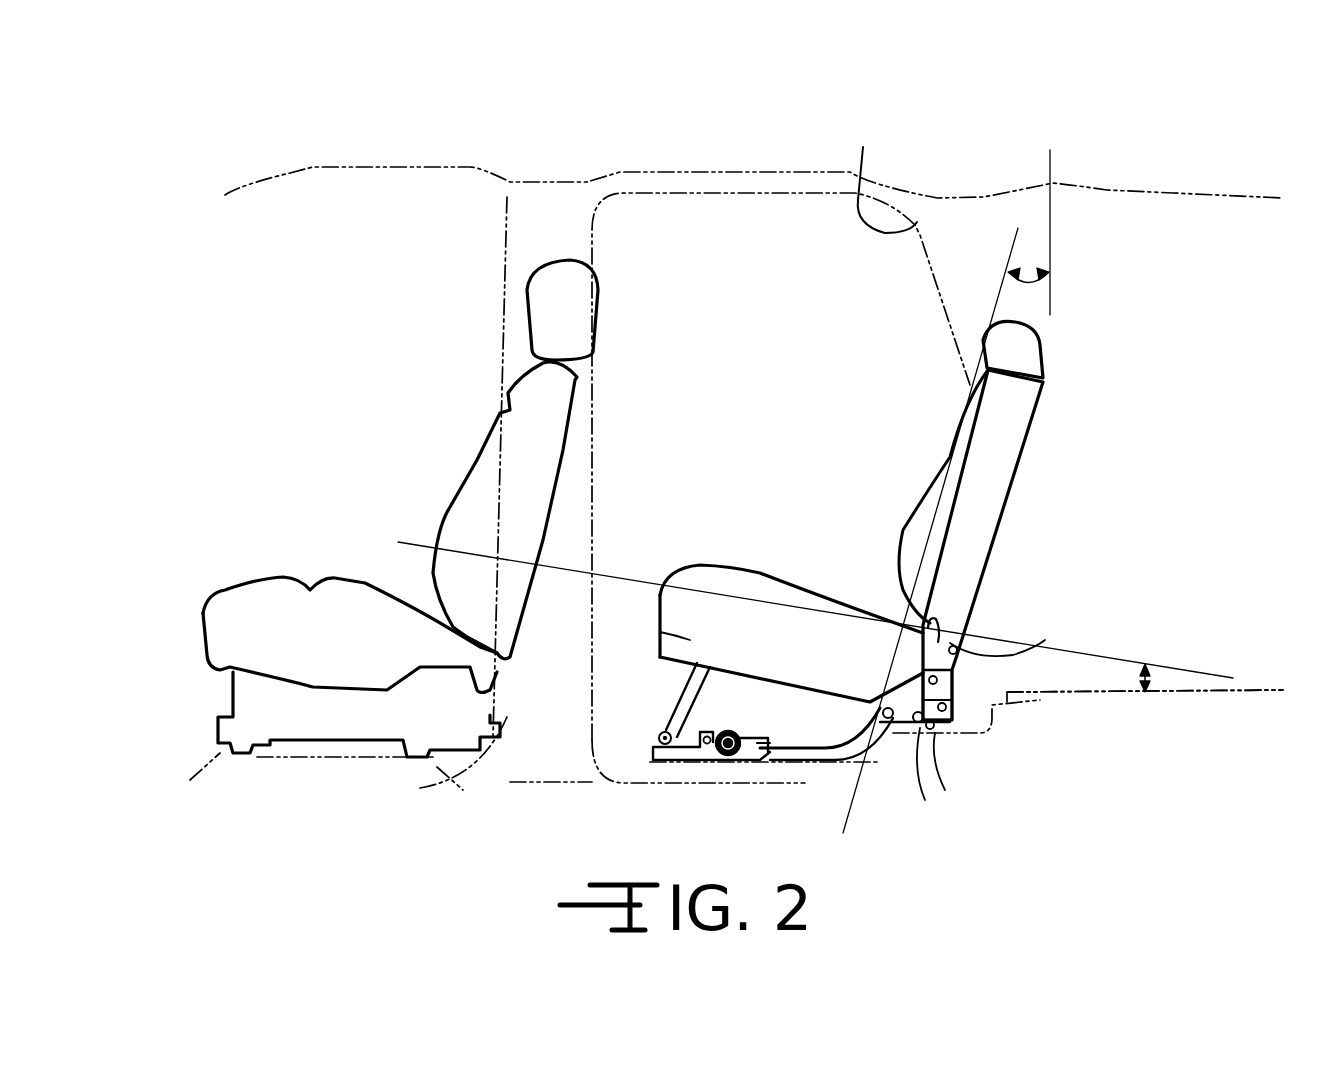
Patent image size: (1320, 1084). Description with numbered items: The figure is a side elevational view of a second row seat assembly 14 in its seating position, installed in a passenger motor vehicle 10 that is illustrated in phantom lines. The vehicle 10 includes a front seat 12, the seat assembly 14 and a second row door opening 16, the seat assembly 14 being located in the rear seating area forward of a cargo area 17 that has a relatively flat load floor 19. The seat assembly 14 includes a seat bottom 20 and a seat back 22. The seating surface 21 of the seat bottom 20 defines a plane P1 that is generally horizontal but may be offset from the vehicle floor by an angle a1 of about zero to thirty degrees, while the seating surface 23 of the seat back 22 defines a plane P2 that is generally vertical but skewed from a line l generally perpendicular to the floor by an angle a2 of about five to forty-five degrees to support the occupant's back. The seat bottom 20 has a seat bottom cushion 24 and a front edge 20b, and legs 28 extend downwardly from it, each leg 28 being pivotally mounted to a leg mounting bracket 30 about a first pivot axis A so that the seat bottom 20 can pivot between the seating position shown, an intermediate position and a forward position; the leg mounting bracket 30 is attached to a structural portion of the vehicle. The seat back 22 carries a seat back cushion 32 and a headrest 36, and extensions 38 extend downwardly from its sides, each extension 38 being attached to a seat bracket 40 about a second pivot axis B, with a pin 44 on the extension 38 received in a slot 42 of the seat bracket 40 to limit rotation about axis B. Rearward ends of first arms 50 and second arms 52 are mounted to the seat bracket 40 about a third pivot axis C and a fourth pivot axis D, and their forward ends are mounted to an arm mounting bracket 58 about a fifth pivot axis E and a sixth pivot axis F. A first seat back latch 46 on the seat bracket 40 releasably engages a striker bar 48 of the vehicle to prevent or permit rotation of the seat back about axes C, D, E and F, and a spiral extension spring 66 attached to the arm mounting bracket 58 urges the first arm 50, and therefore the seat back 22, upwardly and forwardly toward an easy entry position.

The motor vehicle 10 is at (236, 152).
The front seat 12 is at (263, 595).
The second row seat assembly 14 is at (1115, 262).
The second row door opening 16 is at (880, 173).
The cargo area 17 is at (1173, 492).
The load floor 19 is at (1187, 690).
The seat bottom 20 is at (726, 592).
The front edge of the seat bottom 20b is at (655, 600).
The seating surface of the seat bottom 21 is at (787, 583).
The seat back 22 is at (1003, 536).
The seating surface of the seat back 23 is at (938, 467).
The seat bottom cushion 24 is at (668, 630).
The leg 28 is at (672, 703).
The leg mounting bracket 30 is at (653, 752).
The seat back cushion 32 is at (1023, 448).
The headrest 36 is at (1040, 348).
The extension 38 is at (960, 657).
The seat bracket 40 is at (960, 713).
The slot 42 is at (957, 678).
The pin 44 is at (955, 697).
The first seat back latch 46 is at (945, 790).
The striker bar 48 is at (925, 800).
The first arm 50 is at (853, 743).
The second arm 52 is at (868, 750).
The arm mounting bracket 58 is at (708, 732).
The spiral extension spring 66 is at (742, 733).
The first pivot axis A is at (655, 737).
The second pivot axis B is at (953, 650).
The third pivot axis C is at (883, 710).
The fourth pivot axis D is at (912, 722).
The fifth pivot axis E is at (735, 752).
The sixth pivot axis F is at (760, 748).
The plane of the seat bottom seating surface P1 is at (605, 575).
The plane of the seat back seating surface P2 is at (1012, 250).
The angle of the seat bottom plane a1 is at (1133, 665).
The angle of the seat back plane a2 is at (1030, 290).
The vertical reference line l is at (1052, 173).